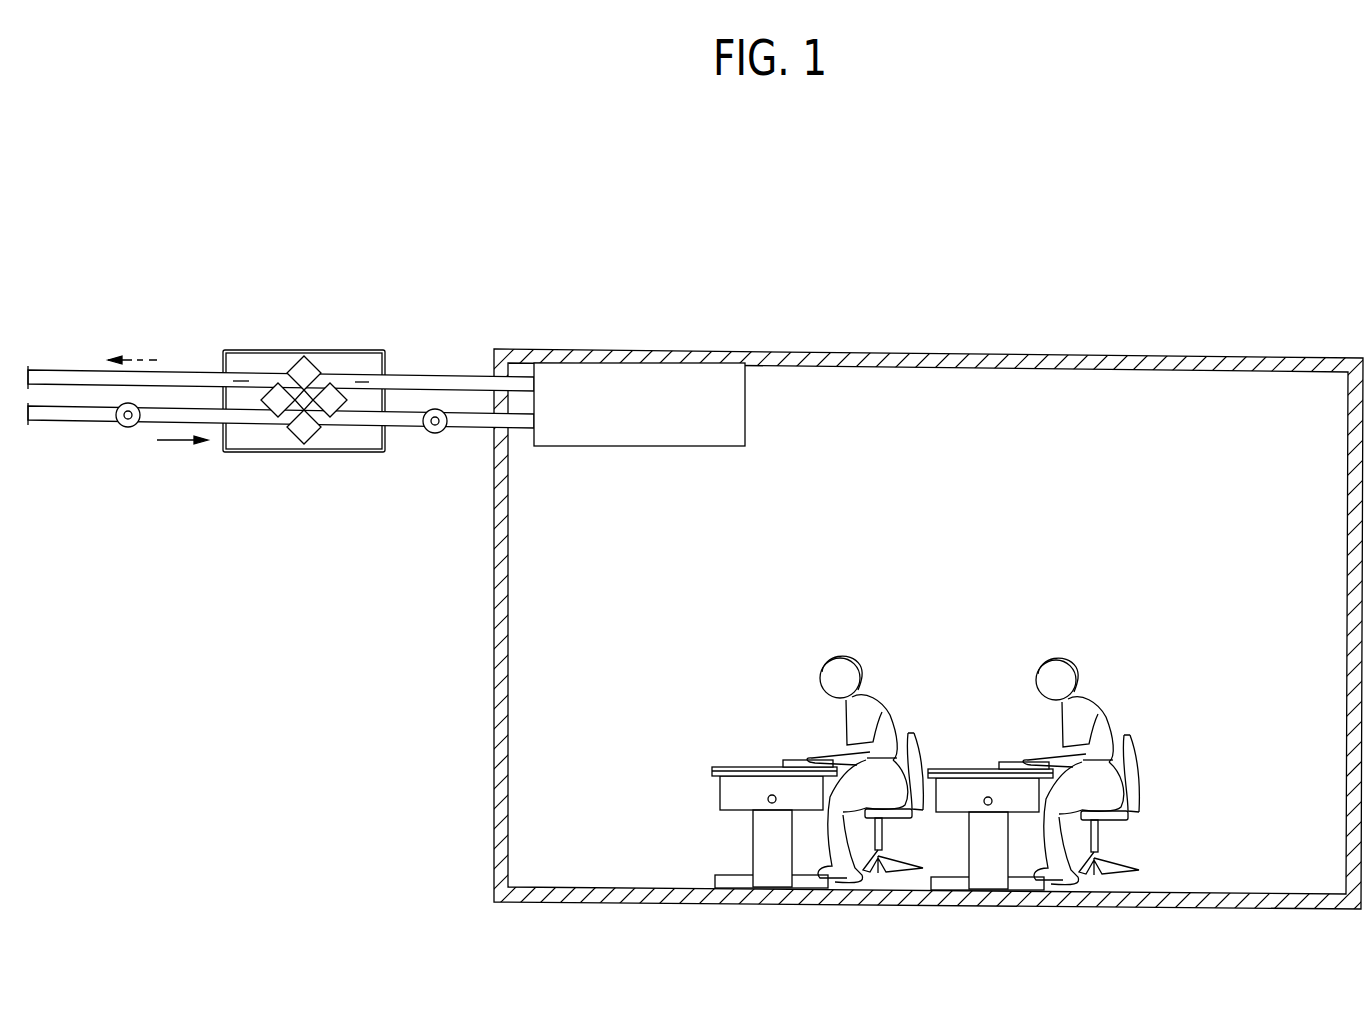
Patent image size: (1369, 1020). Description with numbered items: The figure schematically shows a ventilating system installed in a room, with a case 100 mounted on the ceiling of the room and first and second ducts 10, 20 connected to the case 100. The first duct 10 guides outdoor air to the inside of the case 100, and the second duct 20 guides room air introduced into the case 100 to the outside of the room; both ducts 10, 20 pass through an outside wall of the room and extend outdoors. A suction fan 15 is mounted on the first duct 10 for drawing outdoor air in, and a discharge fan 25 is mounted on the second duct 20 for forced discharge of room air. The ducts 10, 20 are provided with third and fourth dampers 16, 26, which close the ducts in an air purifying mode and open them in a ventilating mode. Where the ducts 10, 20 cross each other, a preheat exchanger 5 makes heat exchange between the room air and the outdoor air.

The preheat exchanger 5 is at (316, 362).
The first duct 10 is at (449, 382).
The suction fan 15 is at (128, 428).
The third damper 16 is at (362, 380).
The second duct 20 is at (472, 429).
The discharge fan 25 is at (435, 434).
The fourth damper 26 is at (240, 379).
The case 100 is at (698, 446).